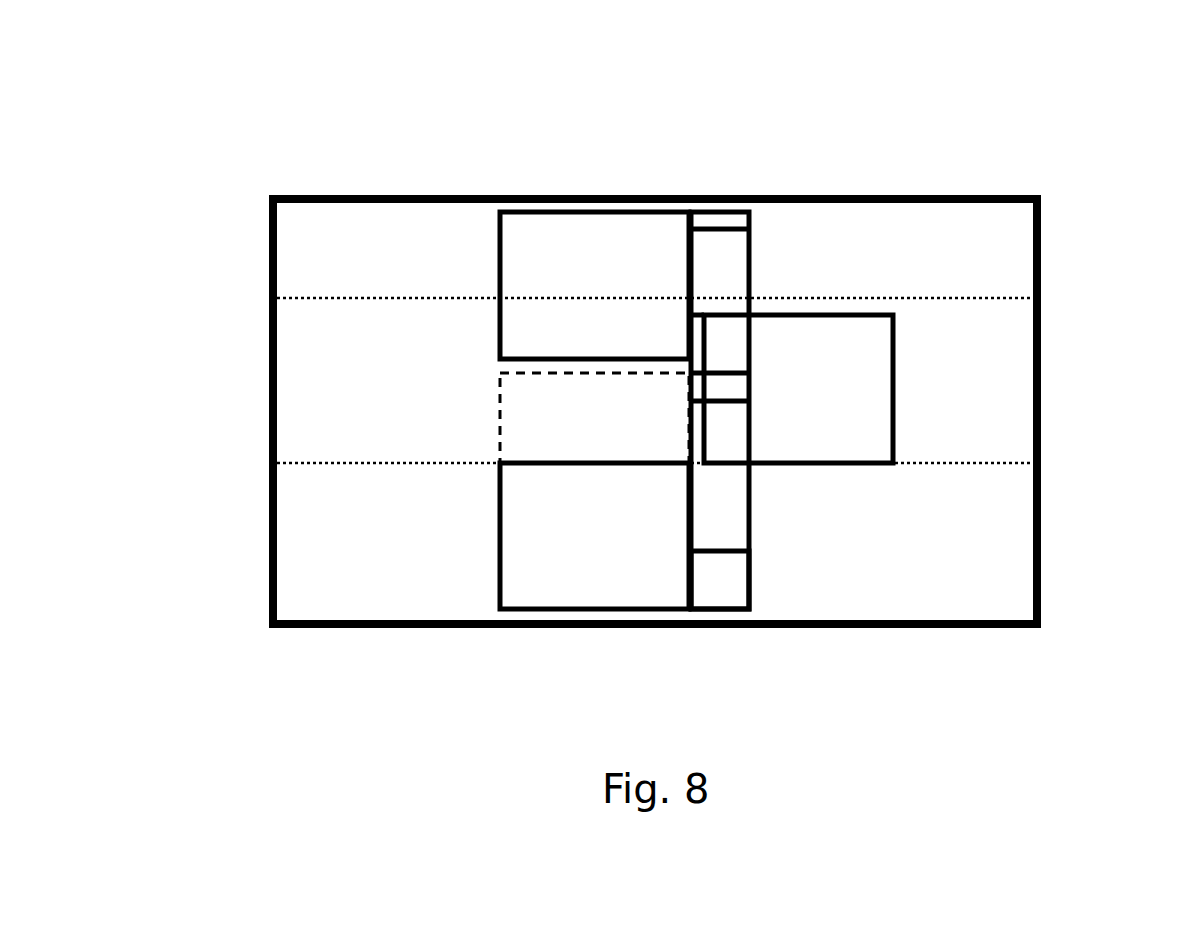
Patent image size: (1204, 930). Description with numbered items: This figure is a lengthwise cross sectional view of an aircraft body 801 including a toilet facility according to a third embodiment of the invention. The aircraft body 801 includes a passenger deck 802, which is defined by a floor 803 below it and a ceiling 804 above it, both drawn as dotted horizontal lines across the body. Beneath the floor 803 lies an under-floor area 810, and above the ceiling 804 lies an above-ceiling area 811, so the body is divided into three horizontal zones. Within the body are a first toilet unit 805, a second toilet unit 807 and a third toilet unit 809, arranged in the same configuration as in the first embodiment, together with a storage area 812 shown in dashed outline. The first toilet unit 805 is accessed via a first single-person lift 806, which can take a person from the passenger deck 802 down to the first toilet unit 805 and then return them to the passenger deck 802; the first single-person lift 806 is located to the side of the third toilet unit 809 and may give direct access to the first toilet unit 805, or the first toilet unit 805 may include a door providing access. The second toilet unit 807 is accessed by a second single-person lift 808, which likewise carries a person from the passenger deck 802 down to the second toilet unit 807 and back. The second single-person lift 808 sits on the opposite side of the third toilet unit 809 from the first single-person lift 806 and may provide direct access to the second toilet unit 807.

The aircraft body 801 is at (944, 141).
The passenger deck 802 is at (1012, 376).
The floor 803 is at (977, 459).
The ceiling 804 is at (1003, 293).
The first toilet unit 805 is at (568, 583).
The first single-person lift 806 is at (732, 583).
The second toilet unit 807 is at (542, 250).
The second single-person lift 808 is at (717, 222).
The third toilet unit 809 is at (827, 333).
The under-floor area 810 is at (1011, 590).
The above-ceiling area 811 is at (1008, 230).
The storage area 812 is at (569, 432).